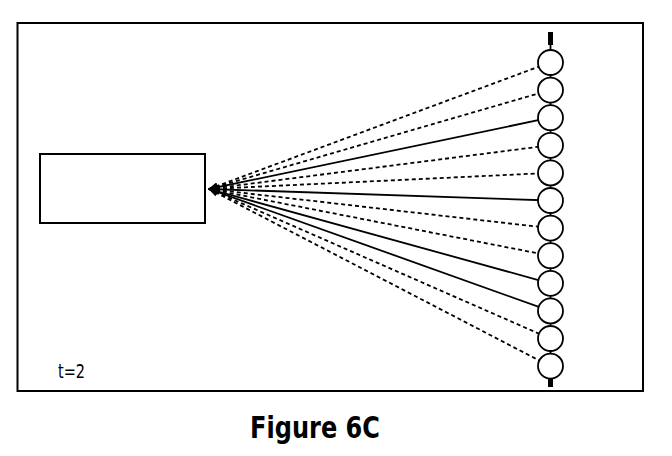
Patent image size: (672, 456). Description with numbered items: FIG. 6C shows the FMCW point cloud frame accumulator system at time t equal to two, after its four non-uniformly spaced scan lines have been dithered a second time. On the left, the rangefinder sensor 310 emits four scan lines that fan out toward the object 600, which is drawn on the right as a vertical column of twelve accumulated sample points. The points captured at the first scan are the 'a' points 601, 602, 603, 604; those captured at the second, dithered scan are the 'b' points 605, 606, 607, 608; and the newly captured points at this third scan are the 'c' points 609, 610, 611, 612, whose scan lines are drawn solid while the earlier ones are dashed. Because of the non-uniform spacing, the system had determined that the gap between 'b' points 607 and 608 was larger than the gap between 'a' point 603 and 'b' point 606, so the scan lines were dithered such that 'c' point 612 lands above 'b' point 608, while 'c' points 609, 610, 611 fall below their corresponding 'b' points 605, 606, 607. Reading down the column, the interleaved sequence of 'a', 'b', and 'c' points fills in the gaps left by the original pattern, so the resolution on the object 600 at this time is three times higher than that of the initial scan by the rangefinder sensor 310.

The rangefinder sensor 310 is at (138, 214).
The object 600 is at (547, 37).
The 'a' point 601 is at (565, 62).
The 'a' point 602 is at (565, 145).
The 'a' point 603 is at (565, 228).
The 'a' point 604 is at (565, 366).
The 'b' point 605 is at (565, 90).
The 'b' point 606 is at (565, 173).
The 'b' point 607 is at (565, 256).
The 'b' point 608 is at (565, 338).
The 'c' point 609 is at (565, 118).
The 'c' point 610 is at (565, 200).
The 'c' point 611 is at (565, 283).
The 'c' point 612 is at (565, 311).